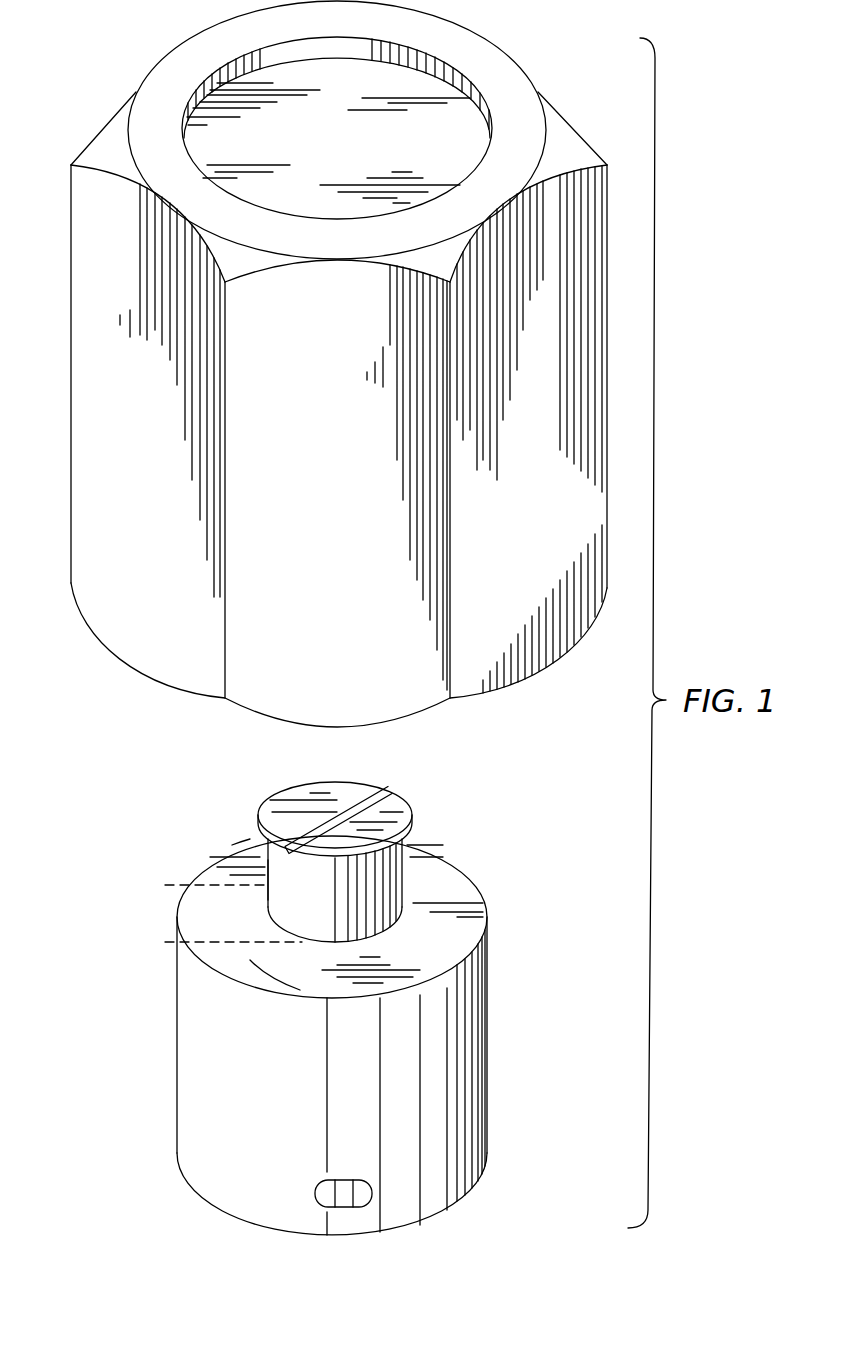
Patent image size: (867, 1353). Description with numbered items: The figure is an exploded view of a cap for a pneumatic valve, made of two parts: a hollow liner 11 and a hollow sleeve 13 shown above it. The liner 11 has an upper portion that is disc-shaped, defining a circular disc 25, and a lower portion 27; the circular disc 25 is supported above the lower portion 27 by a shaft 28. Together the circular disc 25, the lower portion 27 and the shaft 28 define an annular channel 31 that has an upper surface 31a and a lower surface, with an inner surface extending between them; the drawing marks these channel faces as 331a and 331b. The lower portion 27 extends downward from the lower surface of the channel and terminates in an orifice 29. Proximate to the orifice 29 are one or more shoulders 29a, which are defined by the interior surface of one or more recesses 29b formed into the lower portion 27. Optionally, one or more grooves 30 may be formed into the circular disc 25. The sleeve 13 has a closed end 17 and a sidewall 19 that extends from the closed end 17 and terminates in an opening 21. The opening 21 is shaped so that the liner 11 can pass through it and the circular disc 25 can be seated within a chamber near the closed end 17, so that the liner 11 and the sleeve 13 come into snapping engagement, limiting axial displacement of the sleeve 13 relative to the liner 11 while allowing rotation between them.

The hollow liner 11 is at (138, 1114).
The hollow sleeve 13 is at (134, 38).
The closed end 17 is at (470, 134).
The sidewall 19 is at (70, 310).
The opening 21 is at (492, 754).
The circular disc 25 is at (397, 807).
The lower portion 27 is at (500, 1210).
The shaft 28 is at (407, 890).
The orifice 29 is at (335, 1250).
The shoulder 29a is at (335, 1190).
The recess 29b is at (353, 1190).
The groove 30 is at (382, 788).
The annular channel 31 is at (160, 880).
The upper surface 31a is at (238, 840).
The neck surface 331a is at (322, 917).
The shoulder surface 331b is at (305, 980).